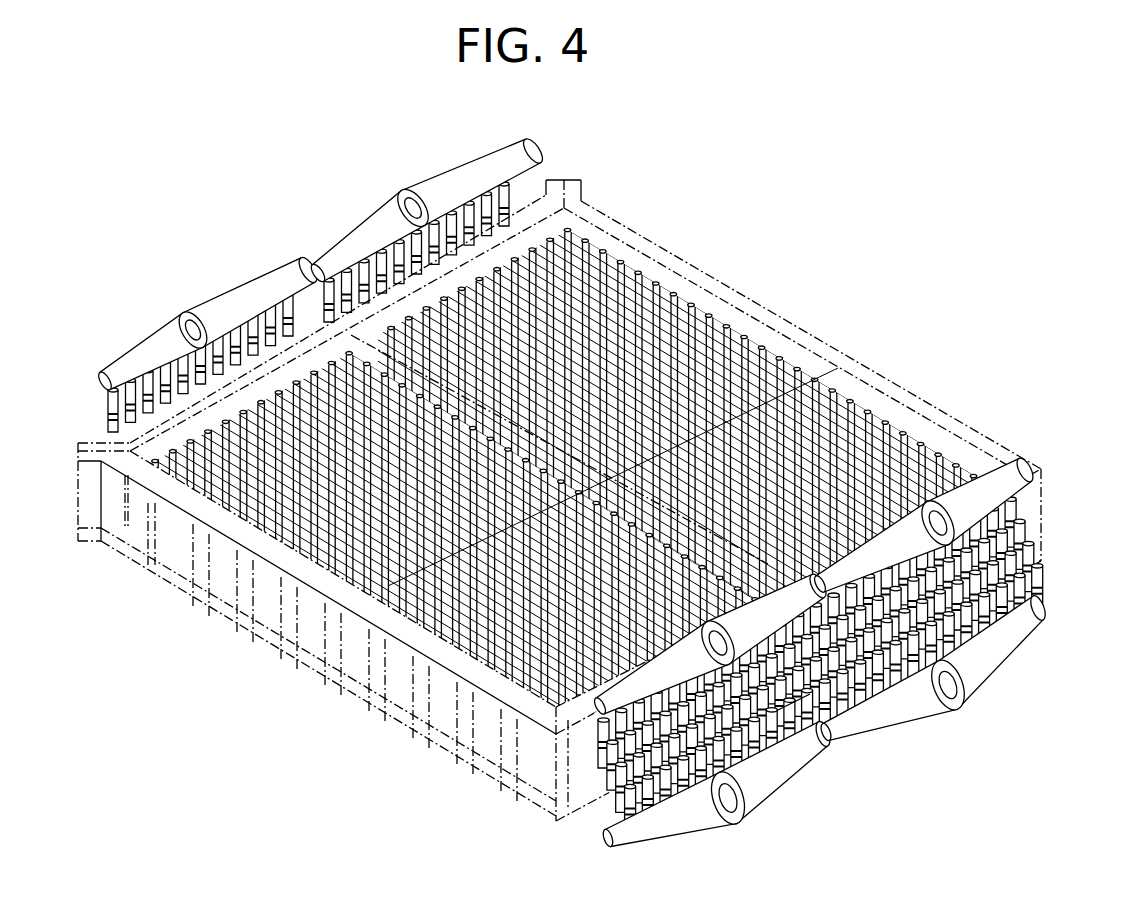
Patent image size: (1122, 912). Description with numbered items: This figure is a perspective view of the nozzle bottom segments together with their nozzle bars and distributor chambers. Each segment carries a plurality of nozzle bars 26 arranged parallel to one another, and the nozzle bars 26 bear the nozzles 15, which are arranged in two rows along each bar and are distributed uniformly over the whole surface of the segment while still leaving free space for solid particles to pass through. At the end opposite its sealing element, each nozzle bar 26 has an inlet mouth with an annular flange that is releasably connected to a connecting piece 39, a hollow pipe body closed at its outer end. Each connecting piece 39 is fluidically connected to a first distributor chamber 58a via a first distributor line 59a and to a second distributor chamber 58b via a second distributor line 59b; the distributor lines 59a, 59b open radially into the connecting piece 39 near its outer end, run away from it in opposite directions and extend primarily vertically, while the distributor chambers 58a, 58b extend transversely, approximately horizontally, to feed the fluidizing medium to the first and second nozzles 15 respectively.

The nozzles 15 is at (583, 243).
The nozzle bar 26 is at (343, 320).
The connecting piece 39 is at (790, 710).
The first distributor chamber 58a is at (508, 138).
The second distributor chamber 58b is at (983, 627).
The first distributor line 59a is at (525, 168).
The second distributor line 59b is at (612, 822).